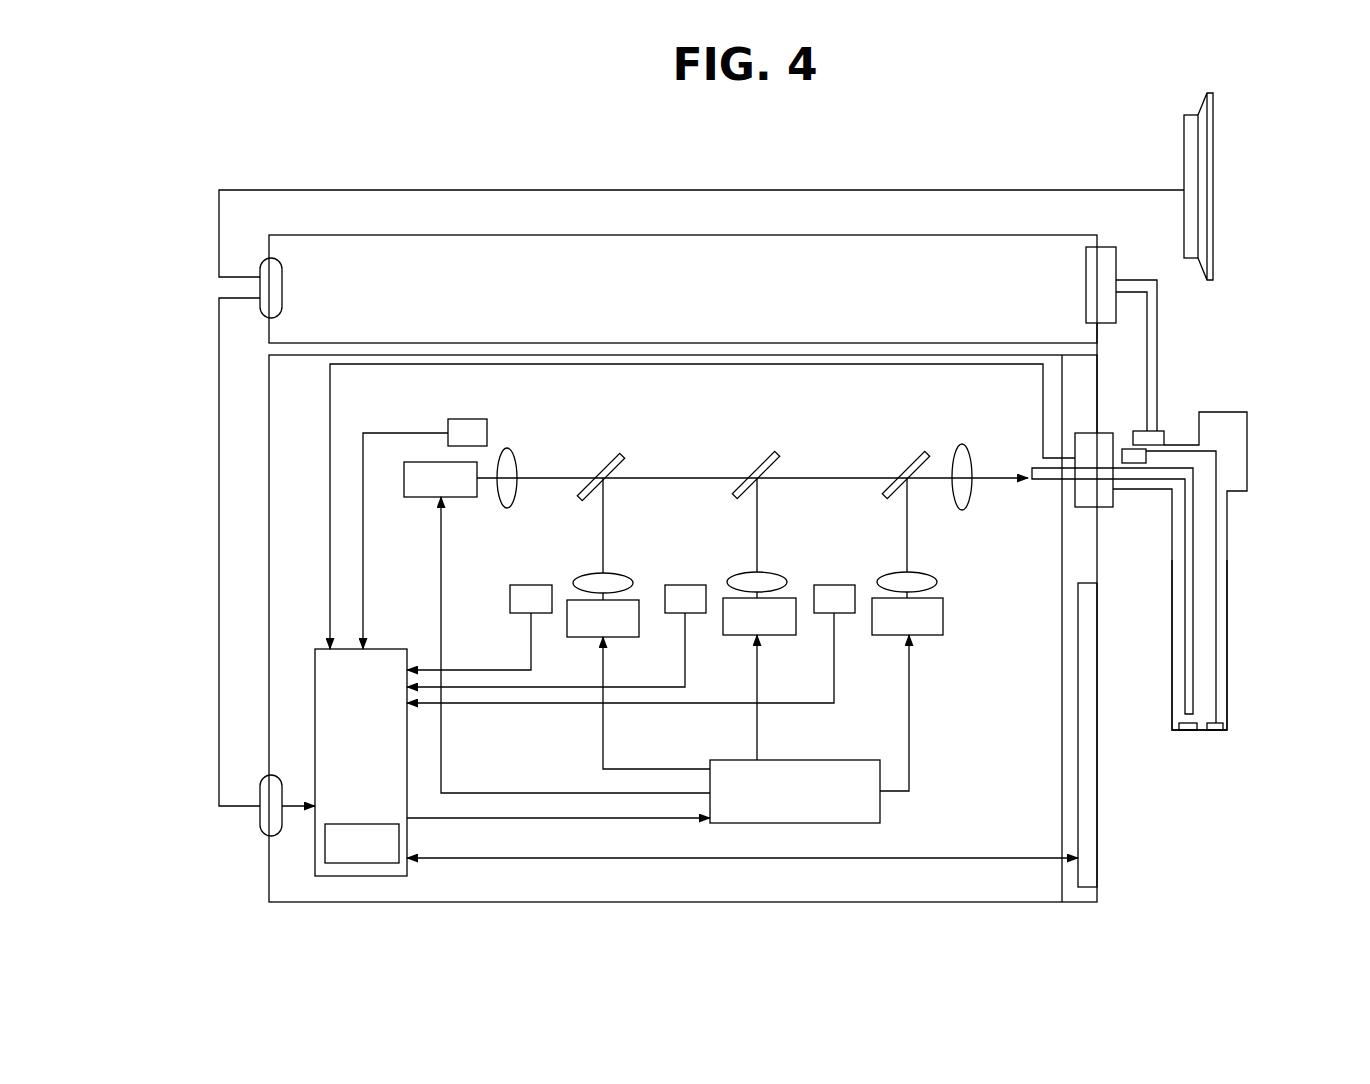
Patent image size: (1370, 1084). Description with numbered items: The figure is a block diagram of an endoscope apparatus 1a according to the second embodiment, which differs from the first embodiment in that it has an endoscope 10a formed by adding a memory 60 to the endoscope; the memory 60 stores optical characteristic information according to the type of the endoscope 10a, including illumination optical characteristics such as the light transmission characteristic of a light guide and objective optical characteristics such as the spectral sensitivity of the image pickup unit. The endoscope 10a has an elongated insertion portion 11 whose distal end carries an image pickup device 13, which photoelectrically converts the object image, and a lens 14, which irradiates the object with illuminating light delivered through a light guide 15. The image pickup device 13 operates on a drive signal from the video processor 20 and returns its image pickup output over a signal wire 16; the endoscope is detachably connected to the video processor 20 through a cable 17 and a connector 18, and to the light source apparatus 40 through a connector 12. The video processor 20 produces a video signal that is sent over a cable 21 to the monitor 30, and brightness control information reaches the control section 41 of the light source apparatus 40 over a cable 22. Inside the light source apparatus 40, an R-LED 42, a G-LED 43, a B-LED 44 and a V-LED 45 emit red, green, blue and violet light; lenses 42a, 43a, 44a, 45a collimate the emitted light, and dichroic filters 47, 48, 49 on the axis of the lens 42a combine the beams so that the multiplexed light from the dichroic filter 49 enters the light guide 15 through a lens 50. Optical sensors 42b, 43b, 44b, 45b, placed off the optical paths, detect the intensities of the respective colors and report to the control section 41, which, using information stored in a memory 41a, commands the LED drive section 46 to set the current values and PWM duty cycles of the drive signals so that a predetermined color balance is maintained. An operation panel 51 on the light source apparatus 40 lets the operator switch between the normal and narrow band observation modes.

The endoscope apparatus 1a is at (385, 165).
The endoscope 10a is at (1228, 510).
The insertion portion 11 is at (1227, 558).
The connector 12 is at (1115, 507).
The image pickup device 13 is at (1215, 731).
The lens 14 is at (1188, 731).
The light guide 15 is at (1185, 650).
The signal wire 16 is at (1216, 638).
The cable 17 is at (1157, 352).
The connector 18 is at (1116, 264).
The video processor 20 is at (678, 235).
The cable 21 is at (474, 190).
The cable 22 is at (219, 552).
The monitor 30 is at (1213, 182).
The light source apparatus 40 is at (681, 903).
The control section 41 is at (358, 878).
The memory 41a is at (362, 824).
The R-LED 42 is at (448, 497).
The lens 42a is at (517, 462).
The optical sensor 42b is at (470, 419).
The G-LED 43 is at (618, 637).
The lens 43a is at (615, 575).
The optical sensor 43b is at (531, 585).
The B-LED 44 is at (772, 635).
The lens 44a is at (768, 573).
The optical sensor 44b is at (686, 585).
The V-LED 45 is at (921, 635).
The lens 45a is at (918, 573).
The optical sensor 45b is at (836, 585).
The LED drive section 46 is at (819, 760).
The dichroic filter 47 is at (603, 462).
The dichroic filter 48 is at (759, 460).
The dichroic filter 49 is at (905, 460).
The lens 50 is at (961, 443).
The operation panel 51 is at (1098, 852).
The memory 60 is at (1126, 449).